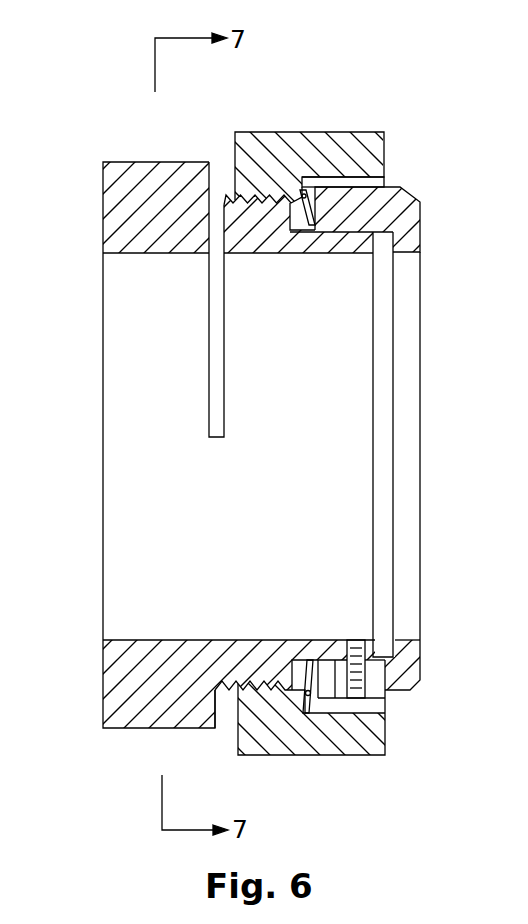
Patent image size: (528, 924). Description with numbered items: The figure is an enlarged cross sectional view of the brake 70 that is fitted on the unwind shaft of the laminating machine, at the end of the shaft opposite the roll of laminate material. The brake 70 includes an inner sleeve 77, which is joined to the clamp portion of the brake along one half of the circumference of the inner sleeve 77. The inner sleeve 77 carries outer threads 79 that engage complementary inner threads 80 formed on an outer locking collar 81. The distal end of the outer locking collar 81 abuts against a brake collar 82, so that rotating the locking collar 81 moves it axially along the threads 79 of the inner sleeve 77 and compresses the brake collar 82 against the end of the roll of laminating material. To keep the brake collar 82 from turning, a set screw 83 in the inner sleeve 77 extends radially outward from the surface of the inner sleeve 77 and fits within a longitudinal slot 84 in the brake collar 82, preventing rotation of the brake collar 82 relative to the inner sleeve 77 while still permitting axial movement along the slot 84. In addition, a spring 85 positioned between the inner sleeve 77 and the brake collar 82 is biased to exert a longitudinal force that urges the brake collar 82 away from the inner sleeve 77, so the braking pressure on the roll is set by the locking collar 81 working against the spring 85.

The brake 70 is at (390, 760).
The inner sleeve 77 is at (225, 198).
The outer threads 79 is at (222, 692).
The inner threads 80 is at (253, 206).
The outer locking collar 81 is at (364, 132).
The brake collar 82 is at (408, 198).
The set screw 83 is at (407, 695).
The longitudinal slot 84 is at (385, 670).
The spring 85 is at (316, 713).